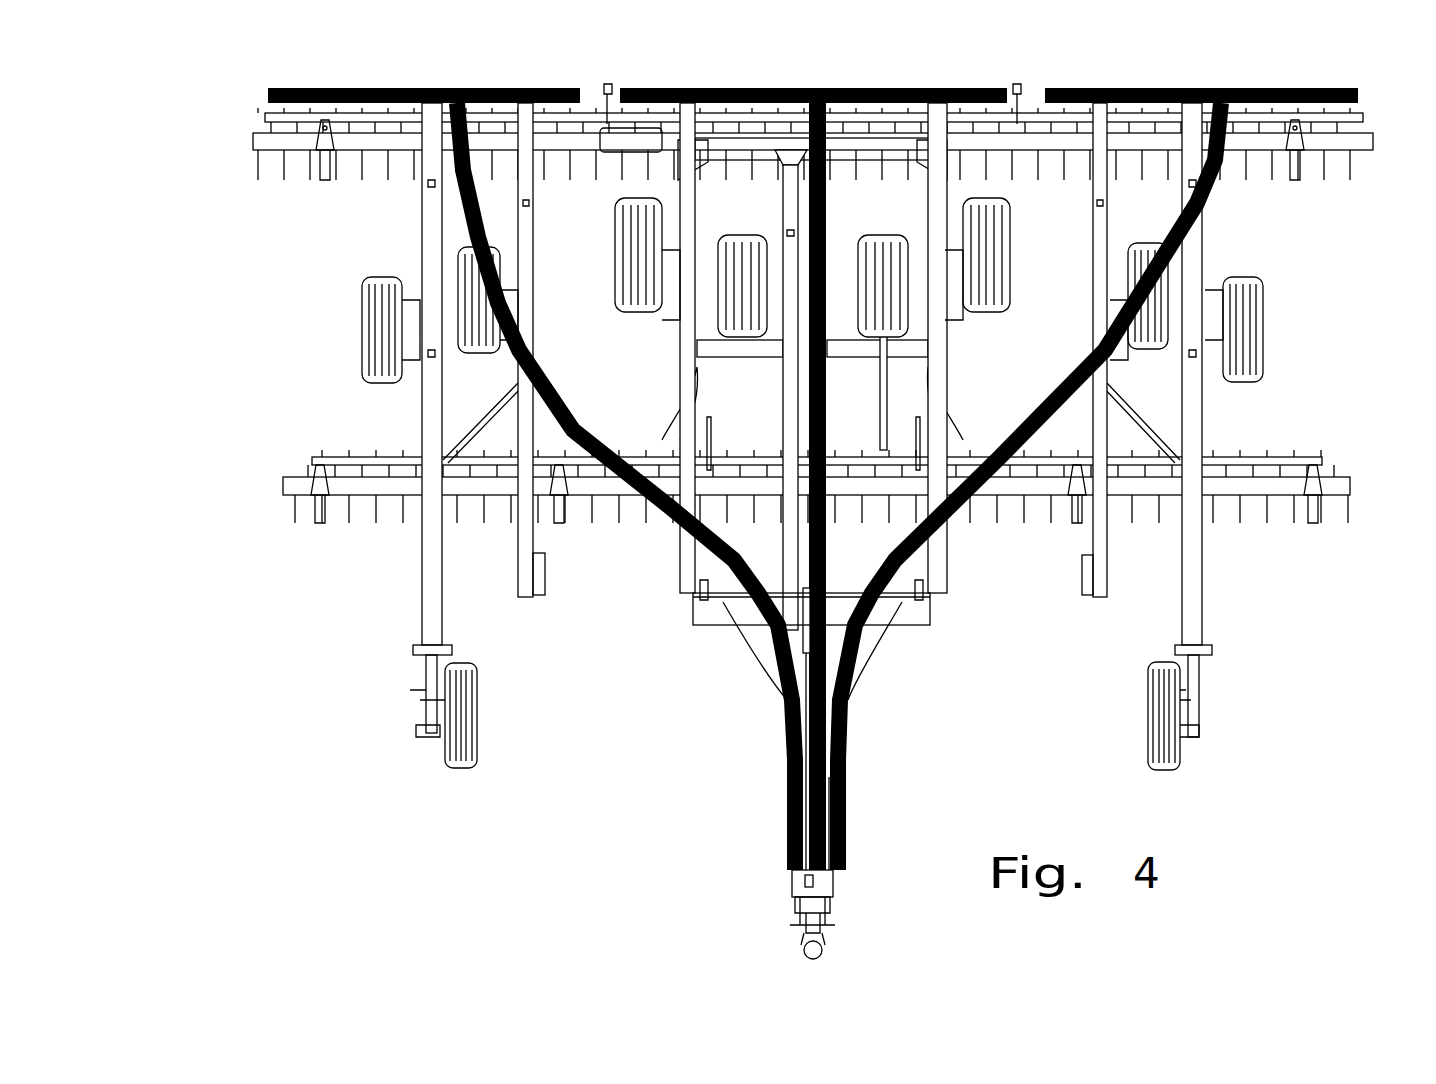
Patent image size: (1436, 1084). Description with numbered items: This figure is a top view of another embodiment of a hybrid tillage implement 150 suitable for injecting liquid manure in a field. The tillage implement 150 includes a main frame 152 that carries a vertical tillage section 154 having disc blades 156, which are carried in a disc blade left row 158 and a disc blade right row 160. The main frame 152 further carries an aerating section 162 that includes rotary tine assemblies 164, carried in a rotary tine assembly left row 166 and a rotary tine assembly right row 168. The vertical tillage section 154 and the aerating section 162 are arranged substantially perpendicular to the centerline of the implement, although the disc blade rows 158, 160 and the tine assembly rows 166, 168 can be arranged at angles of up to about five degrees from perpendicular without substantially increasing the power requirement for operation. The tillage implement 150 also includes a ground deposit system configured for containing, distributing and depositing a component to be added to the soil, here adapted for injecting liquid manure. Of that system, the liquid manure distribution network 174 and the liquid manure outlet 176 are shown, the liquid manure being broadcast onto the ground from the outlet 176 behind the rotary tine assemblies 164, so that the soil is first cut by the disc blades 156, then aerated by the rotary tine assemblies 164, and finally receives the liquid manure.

The tillage implement 150 is at (578, 820).
The main frame 152 is at (763, 648).
The vertical tillage section 154 is at (265, 490).
The disc blades 156 is at (383, 517).
The disc blade left row 158 is at (1028, 547).
The disc blade right row 160 is at (596, 552).
The aerating section 162 is at (240, 142).
The rotary tine assemblies 164 is at (275, 178).
The rotary tine assembly left row 166 is at (1298, 213).
The rotary tine assembly right row 168 is at (321, 213).
The liquid manure distribution network 174 is at (775, 886).
The liquid manure outlet 176 is at (378, 88).